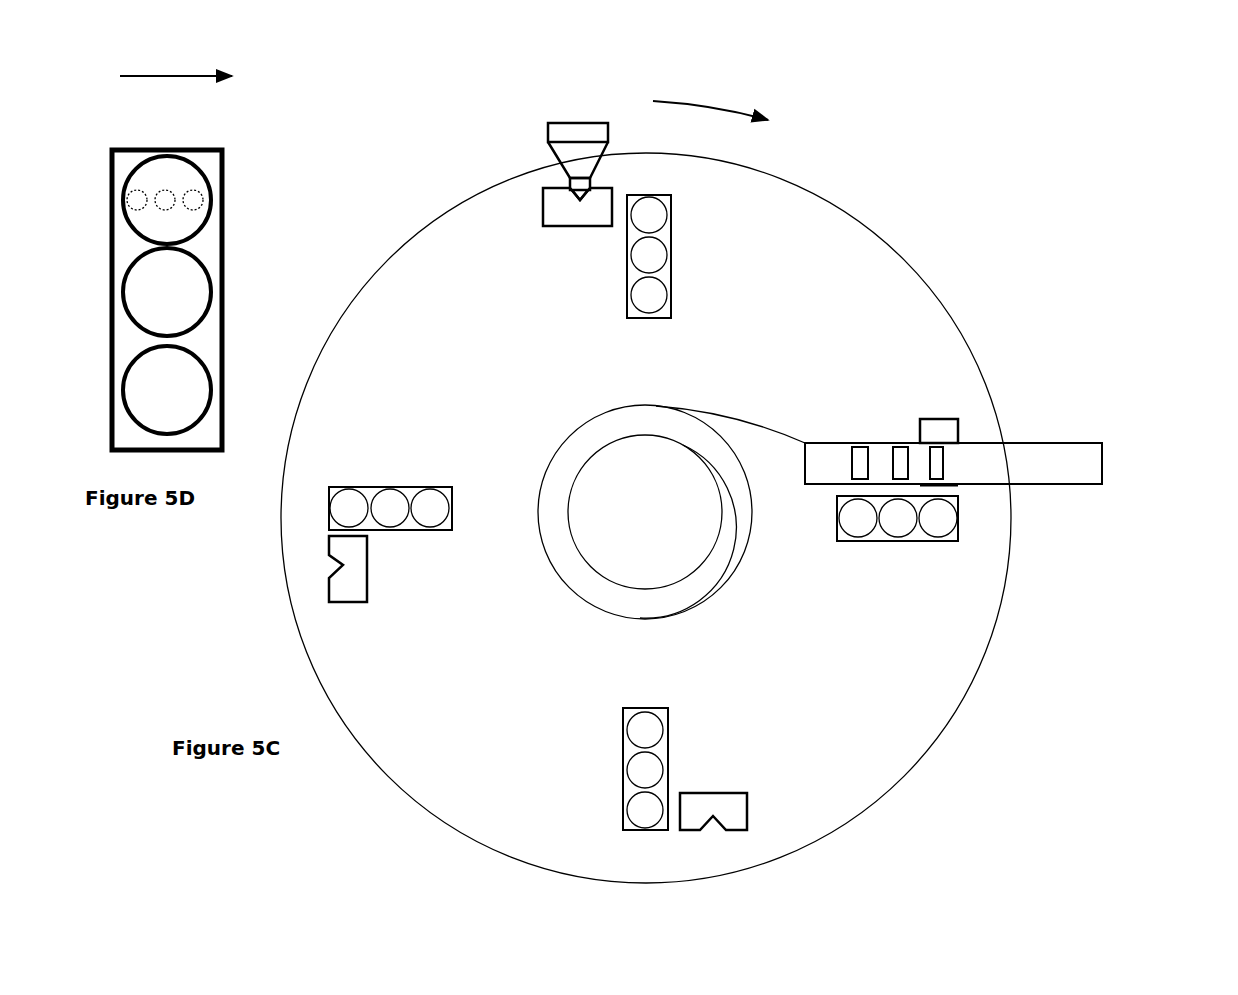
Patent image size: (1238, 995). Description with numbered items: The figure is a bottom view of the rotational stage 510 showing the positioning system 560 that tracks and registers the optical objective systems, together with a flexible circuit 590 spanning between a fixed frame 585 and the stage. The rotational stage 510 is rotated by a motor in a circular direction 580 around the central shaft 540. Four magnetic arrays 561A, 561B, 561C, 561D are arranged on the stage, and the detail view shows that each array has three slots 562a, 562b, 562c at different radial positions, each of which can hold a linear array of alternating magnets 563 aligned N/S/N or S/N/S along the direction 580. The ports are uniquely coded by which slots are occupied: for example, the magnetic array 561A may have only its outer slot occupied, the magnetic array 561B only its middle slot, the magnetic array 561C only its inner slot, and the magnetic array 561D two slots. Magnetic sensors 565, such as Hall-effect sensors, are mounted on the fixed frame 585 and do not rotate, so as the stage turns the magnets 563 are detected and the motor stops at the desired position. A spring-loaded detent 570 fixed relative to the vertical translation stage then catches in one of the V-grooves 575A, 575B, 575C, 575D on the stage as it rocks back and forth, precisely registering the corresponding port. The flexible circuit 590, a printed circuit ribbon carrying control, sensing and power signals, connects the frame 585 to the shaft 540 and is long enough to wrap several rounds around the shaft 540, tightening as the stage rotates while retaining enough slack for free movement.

In FIG. 5C, the rotational stage 510 is at (945, 298).
In FIG. 5C, the shaft 540 is at (580, 560).
In FIG. 5C, the positioning system 560 is at (900, 174).
In FIG. 5D, the magnetic array 561A is at (110, 190).
In FIG. 5C, the magnetic array 561A is at (677, 258).
In FIG. 5C, the magnetic array 561B is at (454, 505).
In FIG. 5C, the magnetic array 561C is at (670, 730).
In FIG. 5C, the magnetic array 561D is at (902, 543).
In FIG. 5D, the slot 562a is at (210, 194).
In FIG. 5D, the slot 562b is at (210, 268).
In FIG. 5D, the slot 562c is at (210, 366).
In FIG. 5D, the magnets 563 is at (146, 178).
In FIG. 5C, the magnetic sensors 565 is at (902, 449).
In FIG. 5C, the spring-loaded detent 570 is at (560, 173).
In FIG. 5C, the V-groove 575A is at (554, 204).
In FIG. 5C, the V-groove 575B is at (357, 568).
In FIG. 5C, the V-groove 575C is at (742, 806).
In FIG. 5C, the V-groove 575D is at (947, 418).
In FIG. 5D, the circular direction 580 is at (214, 74).
In FIG. 5C, the circular direction 580 is at (742, 104).
In FIG. 5C, the fixed frame 585 is at (1069, 442).
In FIG. 5C, the flexible circuit 590 is at (762, 420).